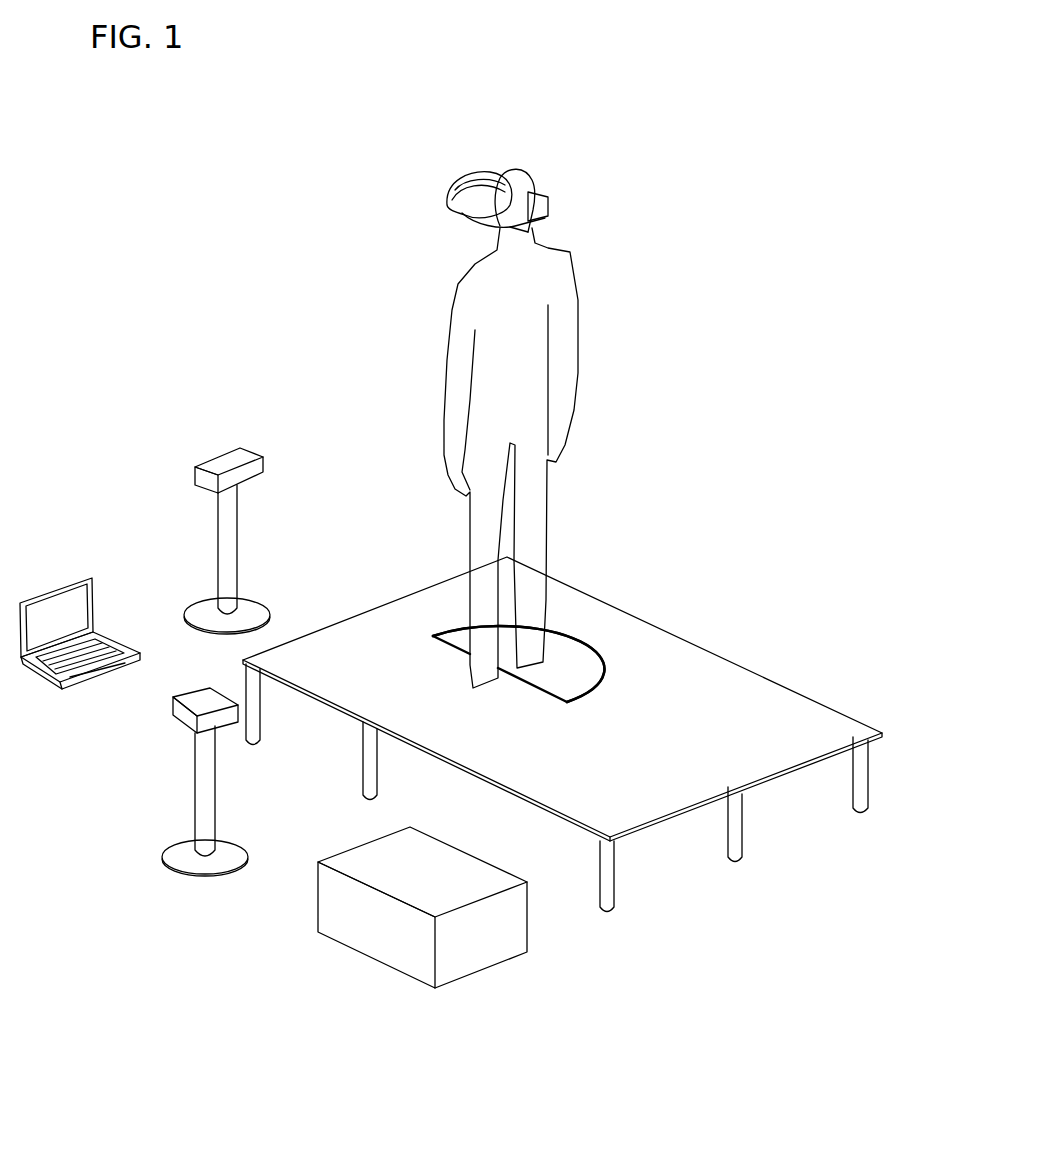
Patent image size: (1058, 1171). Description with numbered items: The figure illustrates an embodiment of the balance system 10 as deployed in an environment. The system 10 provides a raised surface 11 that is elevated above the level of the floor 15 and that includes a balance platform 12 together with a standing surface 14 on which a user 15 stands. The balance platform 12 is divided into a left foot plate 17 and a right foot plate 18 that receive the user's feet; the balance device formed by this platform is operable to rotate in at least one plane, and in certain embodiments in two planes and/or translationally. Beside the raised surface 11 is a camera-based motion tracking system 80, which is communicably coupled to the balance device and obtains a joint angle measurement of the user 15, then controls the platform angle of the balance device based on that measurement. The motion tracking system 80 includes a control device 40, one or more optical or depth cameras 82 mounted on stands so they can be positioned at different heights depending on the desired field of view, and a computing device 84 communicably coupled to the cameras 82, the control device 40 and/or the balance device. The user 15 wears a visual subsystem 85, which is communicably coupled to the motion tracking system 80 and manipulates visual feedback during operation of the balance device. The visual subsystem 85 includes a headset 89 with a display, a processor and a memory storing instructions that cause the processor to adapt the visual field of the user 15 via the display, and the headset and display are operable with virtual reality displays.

The system 10 is at (778, 172).
The raised surface 11 is at (650, 797).
The balance platform 12 is at (445, 652).
The standing surface 14 is at (652, 650).
The floor / user 15 is at (600, 433).
The left foot plate 17 is at (435, 683).
The right foot plate 18 is at (565, 652).
The control device 40 is at (343, 915).
The camera-based motion tracking system 80 is at (93, 388).
The optical or depth camera 82 is at (207, 460).
The computing device 84 is at (46, 583).
The visual subsystem 85 is at (449, 168).
The headset 89 is at (548, 205).